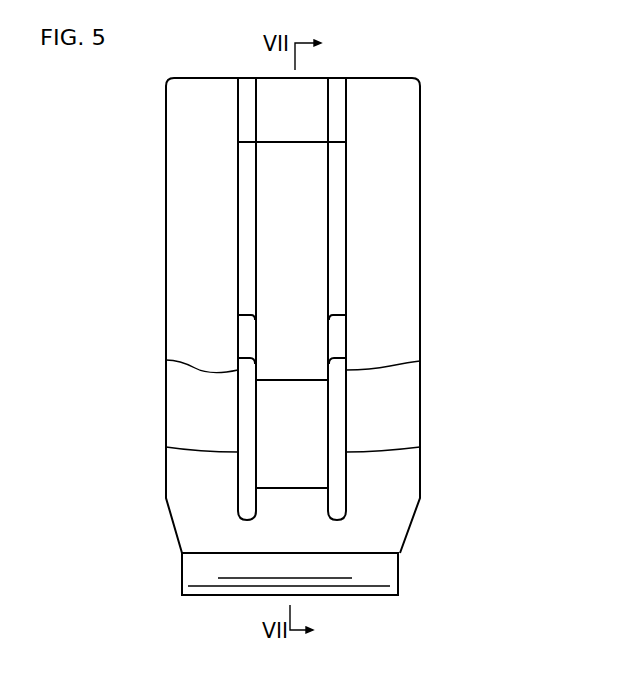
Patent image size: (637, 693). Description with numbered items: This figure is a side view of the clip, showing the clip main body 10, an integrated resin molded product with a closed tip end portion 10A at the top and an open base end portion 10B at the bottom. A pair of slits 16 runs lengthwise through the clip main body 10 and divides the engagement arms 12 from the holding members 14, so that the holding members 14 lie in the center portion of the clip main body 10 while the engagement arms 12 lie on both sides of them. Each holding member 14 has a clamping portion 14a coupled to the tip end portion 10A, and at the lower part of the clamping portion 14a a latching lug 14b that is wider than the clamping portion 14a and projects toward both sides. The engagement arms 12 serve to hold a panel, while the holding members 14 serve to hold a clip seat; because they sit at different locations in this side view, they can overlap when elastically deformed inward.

The clip main body 10 is at (130, 131).
The tip end portion 10A is at (396, 73).
The base end portion 10B is at (213, 596).
The engagement arm 12 is at (185, 238).
The holding member 14 is at (255, 191).
The clamping portion 14a is at (305, 245).
The latching lug 14b is at (246, 336).
The slit 16 is at (245, 410).